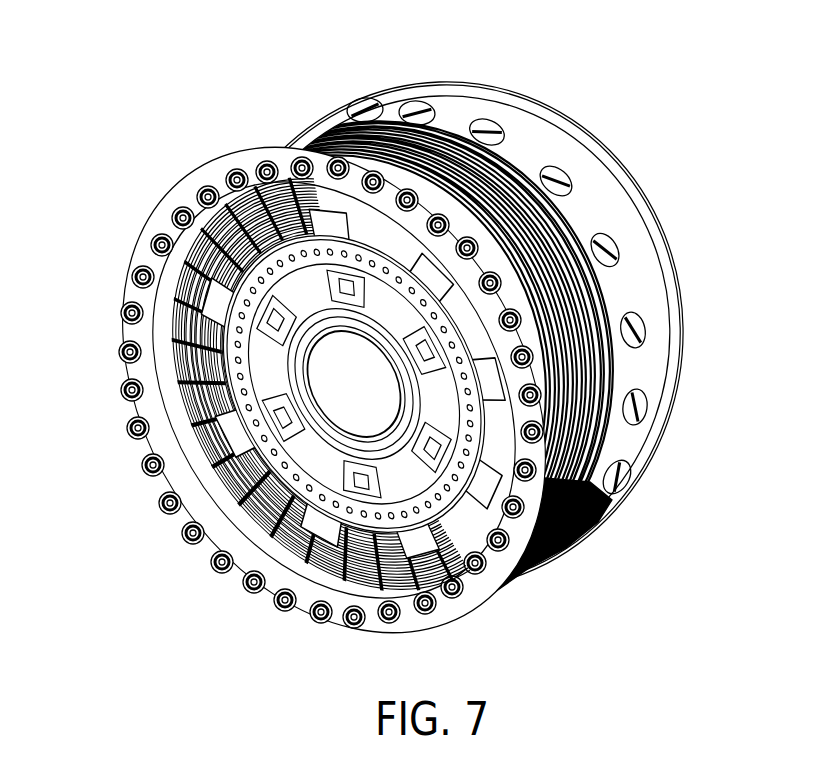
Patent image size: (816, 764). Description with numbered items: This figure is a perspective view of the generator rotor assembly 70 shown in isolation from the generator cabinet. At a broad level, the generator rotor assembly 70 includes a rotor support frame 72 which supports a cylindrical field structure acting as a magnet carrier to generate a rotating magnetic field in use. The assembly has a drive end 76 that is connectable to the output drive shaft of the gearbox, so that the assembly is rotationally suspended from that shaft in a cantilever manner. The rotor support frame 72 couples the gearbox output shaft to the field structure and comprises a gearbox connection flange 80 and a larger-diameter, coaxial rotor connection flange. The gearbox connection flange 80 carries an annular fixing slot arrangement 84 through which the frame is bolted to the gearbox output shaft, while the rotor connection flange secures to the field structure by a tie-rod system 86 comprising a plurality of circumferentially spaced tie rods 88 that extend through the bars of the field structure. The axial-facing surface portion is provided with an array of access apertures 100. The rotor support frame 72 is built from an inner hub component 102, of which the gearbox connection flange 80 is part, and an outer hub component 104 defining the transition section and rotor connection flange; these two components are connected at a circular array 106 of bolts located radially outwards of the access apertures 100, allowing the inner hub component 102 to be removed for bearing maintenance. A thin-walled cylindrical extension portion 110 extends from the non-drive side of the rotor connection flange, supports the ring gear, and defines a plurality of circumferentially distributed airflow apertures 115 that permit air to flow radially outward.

The generator rotor assembly 70 is at (672, 97).
The rotor support frame 72 is at (664, 304).
The drive end 76 is at (190, 540).
The gearbox connection flange 80 is at (258, 597).
The annular fixing slot arrangement 84 is at (315, 418).
The tie-rod system 86 is at (232, 160).
The tie rods 88 is at (143, 258).
The access apertures 100 is at (500, 378).
The inner hub component 102 is at (145, 442).
The outer hub component 104 is at (122, 343).
The circular array of bolts 106 is at (547, 562).
The extension portion 110 is at (643, 258).
The airflow apertures 115 is at (549, 160).